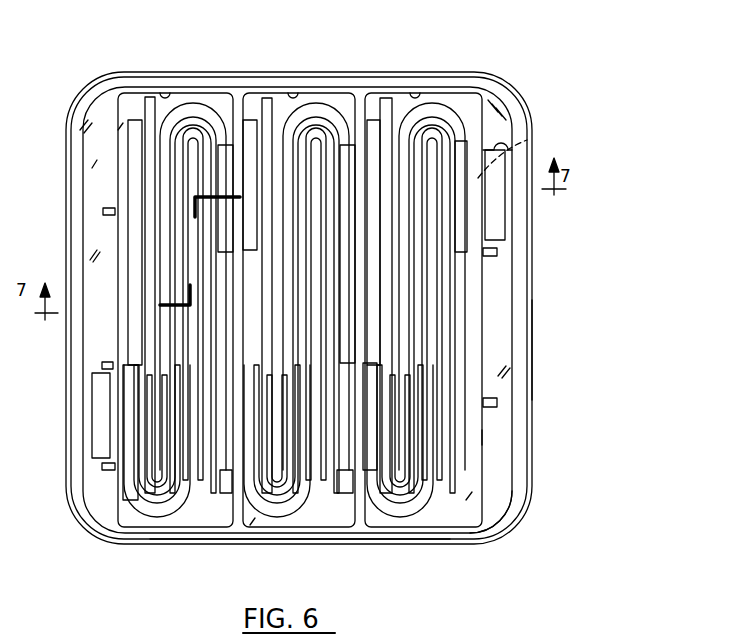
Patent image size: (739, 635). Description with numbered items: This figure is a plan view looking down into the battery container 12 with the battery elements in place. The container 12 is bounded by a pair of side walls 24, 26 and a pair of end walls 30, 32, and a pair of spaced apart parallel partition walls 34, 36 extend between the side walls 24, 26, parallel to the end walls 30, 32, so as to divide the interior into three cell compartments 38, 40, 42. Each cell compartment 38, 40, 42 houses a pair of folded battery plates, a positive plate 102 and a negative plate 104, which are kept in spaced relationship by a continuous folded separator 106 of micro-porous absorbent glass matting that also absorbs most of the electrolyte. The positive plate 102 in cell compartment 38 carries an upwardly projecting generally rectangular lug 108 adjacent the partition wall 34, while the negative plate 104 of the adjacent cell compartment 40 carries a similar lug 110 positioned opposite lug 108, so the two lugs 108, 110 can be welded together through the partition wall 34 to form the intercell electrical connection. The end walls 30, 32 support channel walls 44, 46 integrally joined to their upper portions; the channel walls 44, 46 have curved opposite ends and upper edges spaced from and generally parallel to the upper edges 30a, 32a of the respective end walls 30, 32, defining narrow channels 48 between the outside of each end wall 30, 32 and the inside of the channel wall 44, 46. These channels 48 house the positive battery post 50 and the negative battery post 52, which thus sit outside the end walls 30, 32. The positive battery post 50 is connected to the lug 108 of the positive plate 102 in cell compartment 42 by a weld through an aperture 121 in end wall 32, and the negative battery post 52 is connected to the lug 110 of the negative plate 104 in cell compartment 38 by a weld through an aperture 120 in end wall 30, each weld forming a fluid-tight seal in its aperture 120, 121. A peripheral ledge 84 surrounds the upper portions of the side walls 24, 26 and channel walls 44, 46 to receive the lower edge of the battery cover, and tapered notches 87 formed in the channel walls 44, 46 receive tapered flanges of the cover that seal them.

The container 12 is at (532, 468).
The side wall 24 is at (287, 545).
The side wall 26 is at (385, 72).
The end wall 30 is at (100, 212).
The upper edge of end wall 30a is at (94, 164).
The end wall 32 is at (484, 417).
The upper edge of end wall 32a is at (476, 438).
The partition wall 34 is at (238, 94).
The partition wall 36 is at (358, 522).
The cell compartment 38 is at (165, 90).
The cell compartment 40 is at (293, 90).
The cell compartment 42 is at (418, 92).
The channel wall 44 is at (68, 346).
The channel wall 46 is at (530, 294).
The channel 48 is at (94, 256).
The positive battery post 50 is at (506, 162).
The negative battery post 52 is at (95, 430).
The peripheral ledge 84 is at (518, 515).
The tapered notch 87 is at (78, 447).
The positive plate 102 is at (323, 108).
The negative plate 104 is at (160, 514).
The separator 106 is at (443, 120).
The lug 108 is at (218, 112).
The lug 110 is at (257, 112).
The aperture 120 is at (108, 396).
The aperture 121 is at (512, 152).